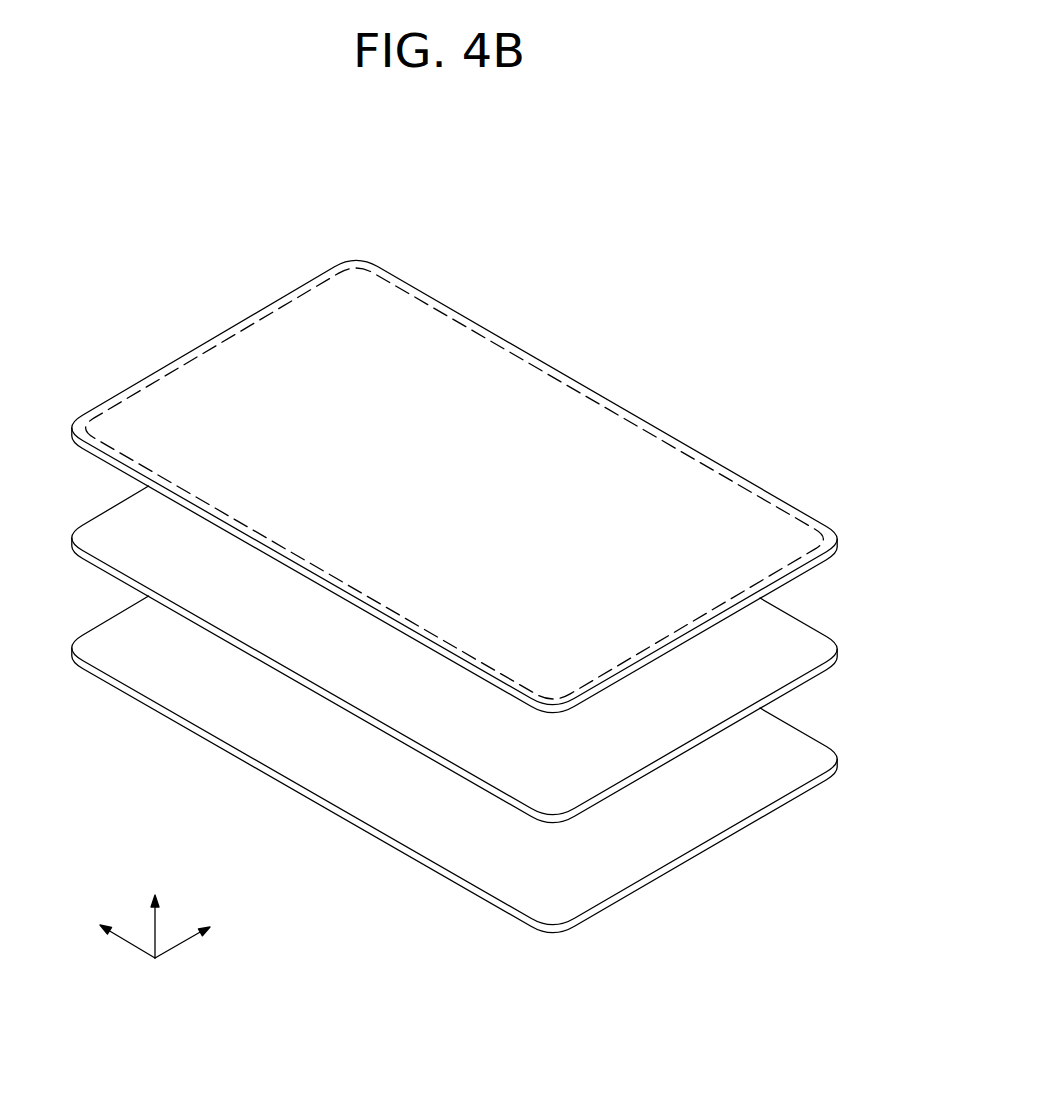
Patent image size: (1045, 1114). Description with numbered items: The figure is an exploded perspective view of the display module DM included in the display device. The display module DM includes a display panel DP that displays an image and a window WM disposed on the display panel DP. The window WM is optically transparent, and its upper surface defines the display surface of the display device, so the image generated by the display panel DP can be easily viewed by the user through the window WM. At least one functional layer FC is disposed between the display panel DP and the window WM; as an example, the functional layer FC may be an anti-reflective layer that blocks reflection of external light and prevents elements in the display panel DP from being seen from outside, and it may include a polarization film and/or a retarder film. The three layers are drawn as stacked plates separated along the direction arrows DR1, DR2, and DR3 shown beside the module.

The display module DM is at (494, 589).
The window WM is at (843, 552).
The functional layer FC is at (815, 646).
The display panel DP is at (817, 757).
The first direction DR1 is at (106, 935).
The second direction DR2 is at (207, 935).
The third direction DR3 is at (156, 916).